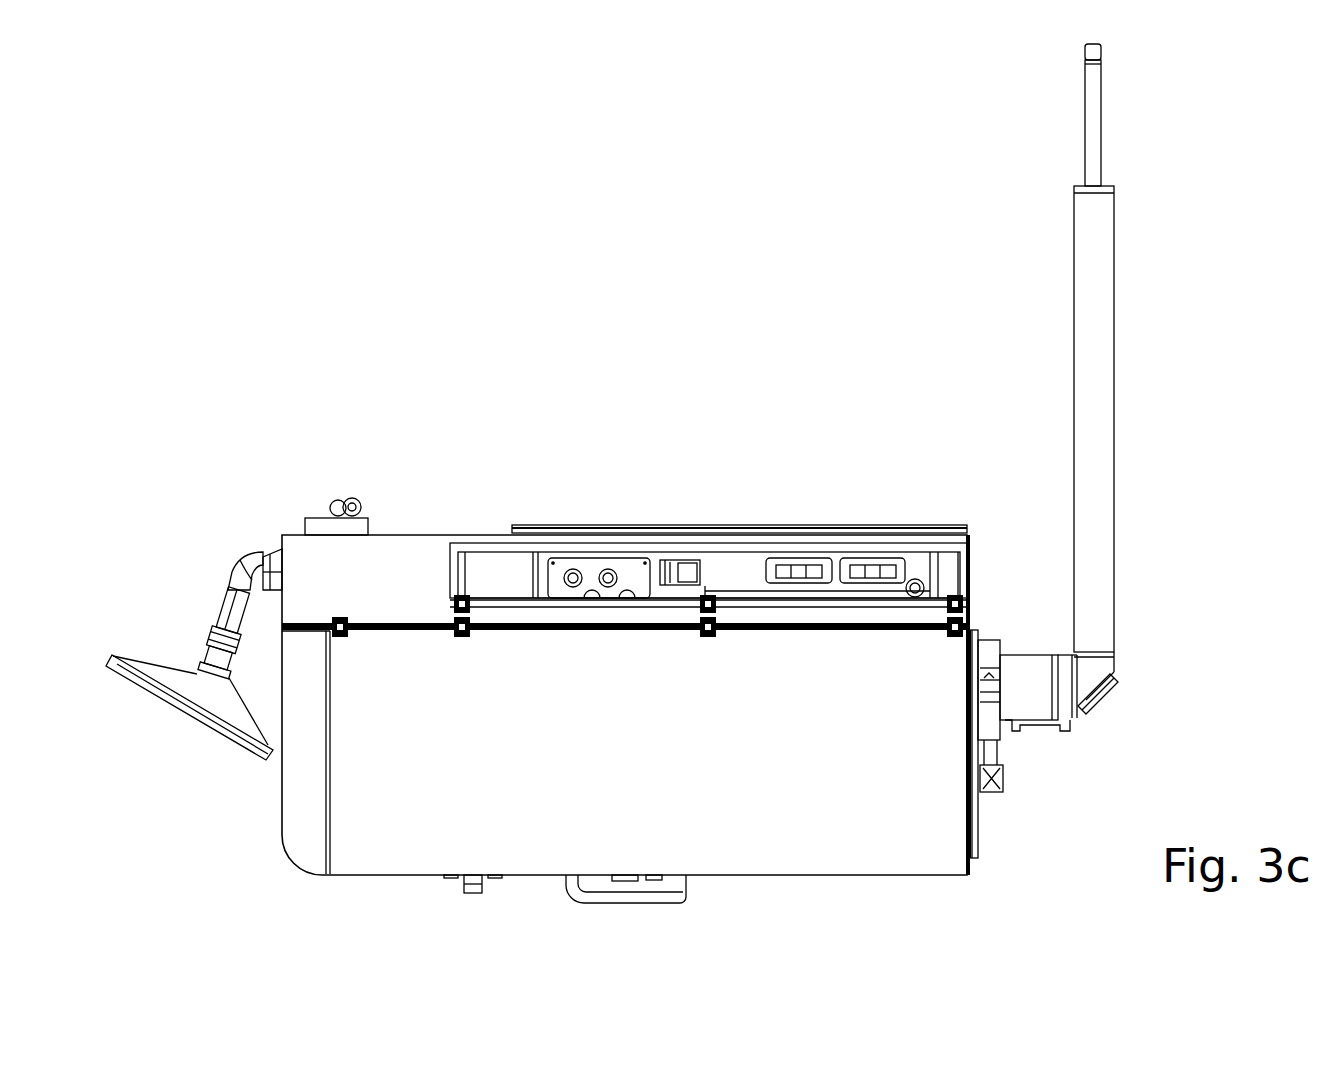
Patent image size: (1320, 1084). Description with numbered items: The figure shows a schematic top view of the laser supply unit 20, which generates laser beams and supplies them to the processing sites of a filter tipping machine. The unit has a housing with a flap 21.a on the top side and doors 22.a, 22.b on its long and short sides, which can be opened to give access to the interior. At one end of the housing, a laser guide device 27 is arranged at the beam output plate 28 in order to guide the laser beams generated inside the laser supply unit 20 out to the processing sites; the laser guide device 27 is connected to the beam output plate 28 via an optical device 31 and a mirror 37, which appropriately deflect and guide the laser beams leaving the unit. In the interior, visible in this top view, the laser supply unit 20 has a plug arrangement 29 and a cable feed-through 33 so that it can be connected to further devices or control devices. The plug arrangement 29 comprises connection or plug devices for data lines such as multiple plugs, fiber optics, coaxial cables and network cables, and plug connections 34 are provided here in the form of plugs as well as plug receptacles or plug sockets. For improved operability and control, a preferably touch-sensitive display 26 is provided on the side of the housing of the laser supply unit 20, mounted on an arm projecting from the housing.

The laser supply unit 20 is at (527, 397).
The flap 21.a is at (795, 852).
The door 22.a is at (912, 535).
The door 22.b is at (713, 530).
The display 26 is at (190, 710).
The laser guide device 27 is at (1100, 367).
The beam output plate 28 is at (975, 830).
The plug arrangement 29 is at (754, 553).
The optical device 31 is at (1068, 690).
The cable feed-through 33 is at (582, 568).
The plug connection 34 is at (693, 567).
The mirror 37 is at (1107, 697).